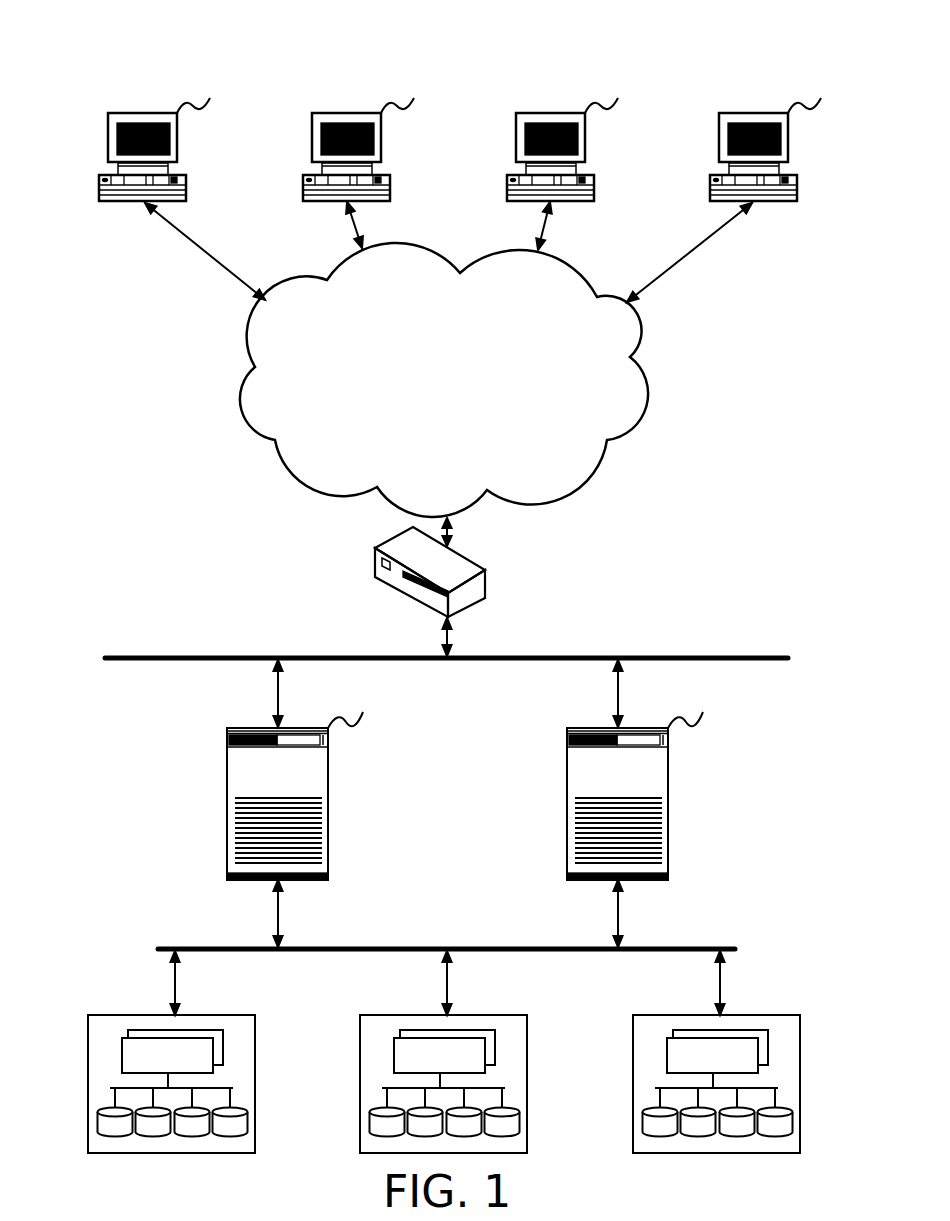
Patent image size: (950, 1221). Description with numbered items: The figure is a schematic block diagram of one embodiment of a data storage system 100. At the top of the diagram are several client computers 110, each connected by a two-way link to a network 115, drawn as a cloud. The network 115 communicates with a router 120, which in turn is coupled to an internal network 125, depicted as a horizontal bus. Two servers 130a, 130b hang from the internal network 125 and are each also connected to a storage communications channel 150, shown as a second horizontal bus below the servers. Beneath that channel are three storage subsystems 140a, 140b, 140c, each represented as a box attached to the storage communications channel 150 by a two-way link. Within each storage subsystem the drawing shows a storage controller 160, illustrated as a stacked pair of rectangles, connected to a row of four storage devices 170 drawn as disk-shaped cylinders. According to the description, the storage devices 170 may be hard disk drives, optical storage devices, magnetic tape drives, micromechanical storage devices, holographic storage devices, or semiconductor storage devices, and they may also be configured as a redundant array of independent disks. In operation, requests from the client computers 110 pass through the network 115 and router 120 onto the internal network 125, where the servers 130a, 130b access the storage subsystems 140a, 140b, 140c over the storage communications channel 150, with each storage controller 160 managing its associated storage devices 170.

The data storage system 100 is at (449, 585).
The client computer 110 is at (479, 136).
The network 115 is at (424, 405).
The router 120 is at (485, 570).
The internal network 125 is at (127, 656).
The server 130a is at (317, 782).
The server 130b is at (657, 782).
The storage communications channel 150 is at (375, 947).
The storage subsystem 140a is at (255, 1015).
The storage subsystem 140b is at (527, 1015).
The storage subsystem 140c is at (800, 1015).
The storage controller 160 is at (122, 1053).
The storage device 170 is at (98, 1118).